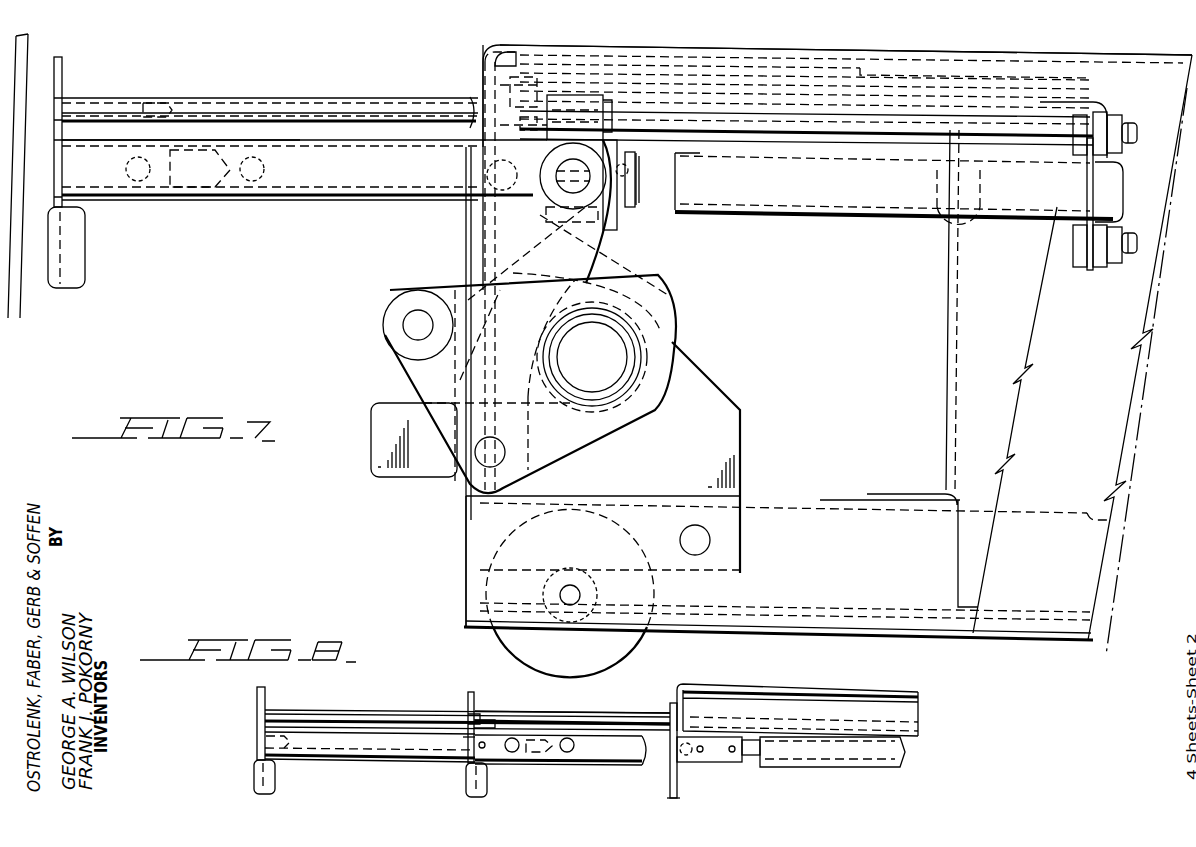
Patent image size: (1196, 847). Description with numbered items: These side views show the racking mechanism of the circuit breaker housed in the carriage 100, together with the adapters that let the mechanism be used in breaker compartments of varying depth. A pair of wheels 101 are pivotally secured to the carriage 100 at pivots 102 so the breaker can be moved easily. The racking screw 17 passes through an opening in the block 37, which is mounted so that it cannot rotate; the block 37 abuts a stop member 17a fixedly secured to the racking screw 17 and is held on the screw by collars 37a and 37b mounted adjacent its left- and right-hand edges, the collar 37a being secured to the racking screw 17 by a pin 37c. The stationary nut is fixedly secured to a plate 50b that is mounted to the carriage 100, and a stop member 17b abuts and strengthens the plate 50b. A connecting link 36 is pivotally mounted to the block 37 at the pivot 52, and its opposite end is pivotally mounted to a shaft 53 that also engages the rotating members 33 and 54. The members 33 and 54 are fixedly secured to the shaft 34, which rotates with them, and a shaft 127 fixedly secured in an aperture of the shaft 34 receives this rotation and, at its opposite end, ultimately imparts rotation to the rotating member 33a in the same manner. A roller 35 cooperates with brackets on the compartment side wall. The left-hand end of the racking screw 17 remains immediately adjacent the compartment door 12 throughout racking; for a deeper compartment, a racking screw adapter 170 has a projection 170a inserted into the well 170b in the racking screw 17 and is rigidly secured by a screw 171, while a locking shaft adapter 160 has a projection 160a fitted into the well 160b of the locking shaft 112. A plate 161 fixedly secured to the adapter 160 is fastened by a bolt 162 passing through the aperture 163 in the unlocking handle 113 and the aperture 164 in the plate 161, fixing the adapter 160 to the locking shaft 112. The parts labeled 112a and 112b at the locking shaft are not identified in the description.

In FIG. 7, the compartment door 12 is at (29, 300).
In FIG. 7, the racking screw 17 is at (347, 195).
In FIG. 8, the racking screw 17 is at (638, 748).
In FIG. 7, the stop member 17a is at (638, 213).
In FIG. 7, the stop member 17b is at (1087, 183).
In FIG. 8, the stop member 17b is at (645, 758).
In FIG. 7, the rotating member 33 is at (670, 300).
In FIG. 7, the rotating member 33a is at (405, 327).
In FIG. 7, the shaft 34 is at (577, 402).
In FIG. 7, the roller 35 is at (392, 310).
In FIG. 7, the connecting link 36 is at (600, 262).
In FIG. 7, the block 37 is at (591, 95).
In FIG. 7, the collar 37a is at (627, 168).
In FIG. 7, the collar 37b is at (618, 147).
In FIG. 7, the pin 37c is at (490, 172).
In FIG. 7, the plate 50b is at (1099, 270).
In FIG. 7, the pivot 52 is at (577, 190).
In FIG. 7, the shaft 53 is at (502, 442).
In FIG. 7, the rotating member 54 is at (647, 280).
In FIG. 7, the carriage 100 is at (830, 53).
In FIG. 8, the carriage 100 is at (769, 674).
In FIG. 7, the wheels 101 is at (642, 650).
In FIG. 7, the pivots 102 is at (574, 586).
In FIG. 7, the locking shaft 112 is at (398, 118).
In FIG. 8, the locking shaft 112 is at (810, 715).
In FIG. 7, the rail end plate 112a is at (541, 116).
In FIG. 7, the rail pin 112b is at (608, 119).
In FIG. 7, the unlocking handle 113 is at (86, 268).
In FIG. 8, the unlocking handle 113 is at (275, 780).
In FIG. 7, the shaft 127 is at (607, 368).
In FIG. 8, the locking shaft adapter 160 is at (375, 698).
In FIG. 7, the projection 160a is at (148, 104).
In FIG. 8, the projection 160a is at (518, 713).
In FIG. 7, the well 160b is at (198, 110).
In FIG. 8, the well 160b is at (568, 717).
In FIG. 7, the plate 161 is at (490, 336).
In FIG. 8, the plate 161 is at (470, 692).
In FIG. 8, the bolt 162 is at (484, 723).
In FIG. 8, the aperture 163 is at (467, 720).
In FIG. 8, the aperture 164 is at (463, 737).
In FIG. 8, the racking screw adapter 170 is at (358, 742).
In FIG. 7, the projection 170a is at (176, 190).
In FIG. 8, the projection 170a is at (531, 754).
In FIG. 7, the well 170b is at (284, 180).
In FIG. 7, the screw 171 is at (122, 182).
In FIG. 8, the screw 171 is at (510, 755).